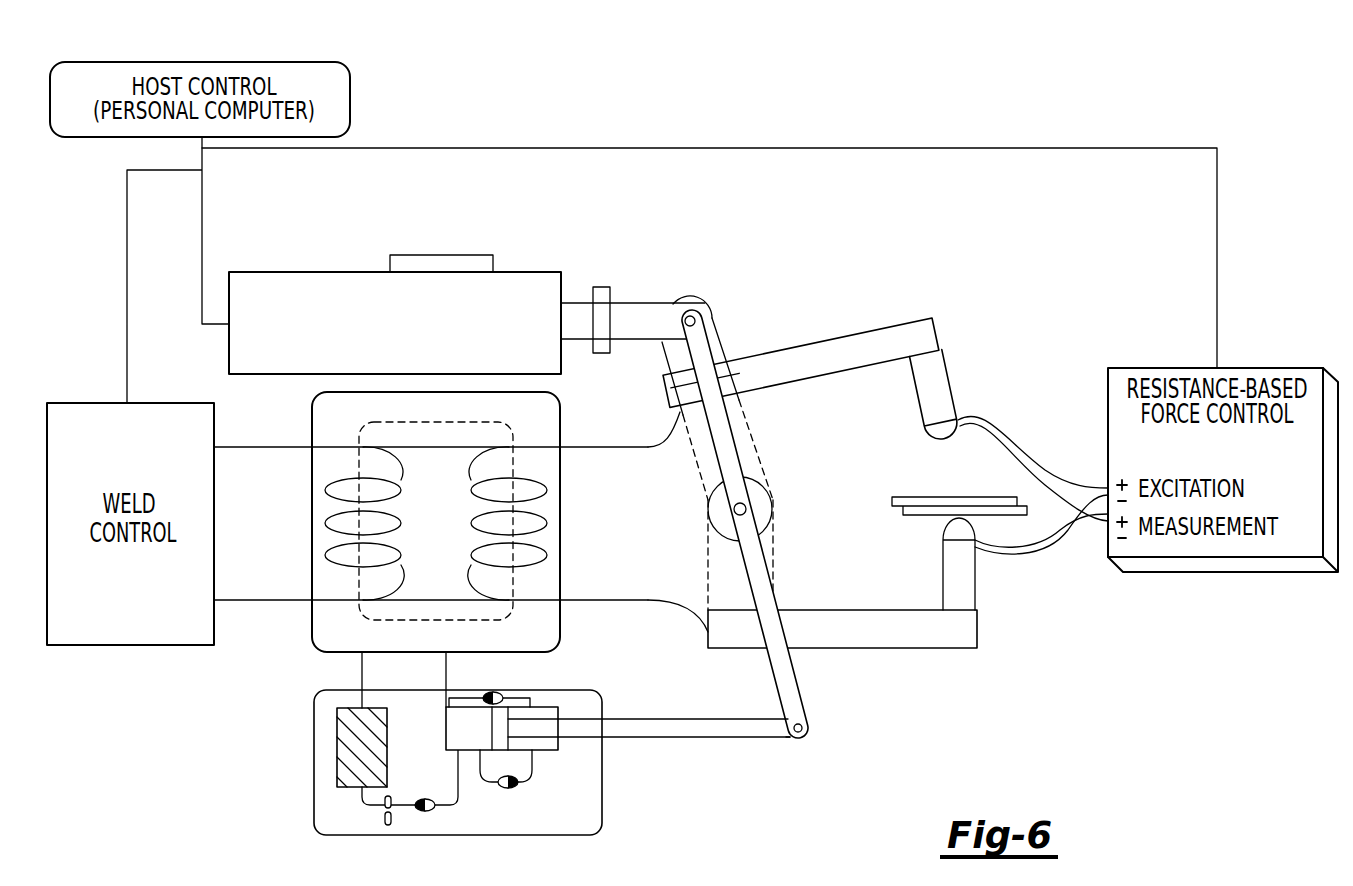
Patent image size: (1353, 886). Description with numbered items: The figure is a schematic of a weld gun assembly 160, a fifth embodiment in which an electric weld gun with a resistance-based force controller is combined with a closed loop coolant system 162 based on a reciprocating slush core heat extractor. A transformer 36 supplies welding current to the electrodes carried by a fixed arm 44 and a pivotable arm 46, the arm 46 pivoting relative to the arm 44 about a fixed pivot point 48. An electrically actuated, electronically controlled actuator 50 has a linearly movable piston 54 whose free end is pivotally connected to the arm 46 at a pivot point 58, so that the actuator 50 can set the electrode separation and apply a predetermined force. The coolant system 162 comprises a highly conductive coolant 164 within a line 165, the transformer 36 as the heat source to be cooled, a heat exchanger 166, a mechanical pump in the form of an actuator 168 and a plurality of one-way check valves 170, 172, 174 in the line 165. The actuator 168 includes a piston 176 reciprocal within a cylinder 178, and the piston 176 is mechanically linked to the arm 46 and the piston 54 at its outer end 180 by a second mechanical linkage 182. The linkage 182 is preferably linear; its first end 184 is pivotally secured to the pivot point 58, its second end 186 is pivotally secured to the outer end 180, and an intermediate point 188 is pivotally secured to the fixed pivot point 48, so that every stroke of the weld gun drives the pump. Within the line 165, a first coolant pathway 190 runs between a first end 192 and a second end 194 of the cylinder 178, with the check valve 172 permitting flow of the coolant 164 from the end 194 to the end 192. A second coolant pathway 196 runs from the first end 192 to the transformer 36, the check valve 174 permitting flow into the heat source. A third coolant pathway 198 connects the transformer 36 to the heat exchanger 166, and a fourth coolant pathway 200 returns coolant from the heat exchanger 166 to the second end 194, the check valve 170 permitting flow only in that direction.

The weld gun assembly 160 is at (673, 88).
The actuator 50 is at (355, 270).
The piston 54 is at (627, 312).
The first end 184 is at (707, 340).
The pivot point 58 is at (708, 306).
The pivotable arm 46 is at (830, 372).
The transformer 36 is at (562, 483).
The fixed pivot point 48 is at (747, 509).
The intermediate point 188 is at (710, 518).
The second mechanical linkage 182 is at (762, 578).
The fixed arm 44 is at (880, 610).
The actuator 168 is at (642, 704).
The outer end 180 is at (808, 728).
The second end 186 is at (795, 738).
The third coolant pathway 198 is at (362, 668).
The coolant 164 is at (372, 822).
The heat exchanger 166 is at (337, 728).
The line 165 is at (357, 792).
The fourth coolant pathway 200 is at (402, 813).
The check valve 170 is at (431, 812).
The cylinder 178 is at (446, 732).
The second end 194 is at (458, 743).
The first end 192 is at (553, 712).
The piston 176 is at (580, 730).
The check valve 174 is at (505, 686).
The second coolant pathway 196 is at (461, 697).
The check valve 172 is at (505, 789).
The first coolant pathway 190 is at (516, 787).
The closed loop coolant system 162 is at (678, 782).